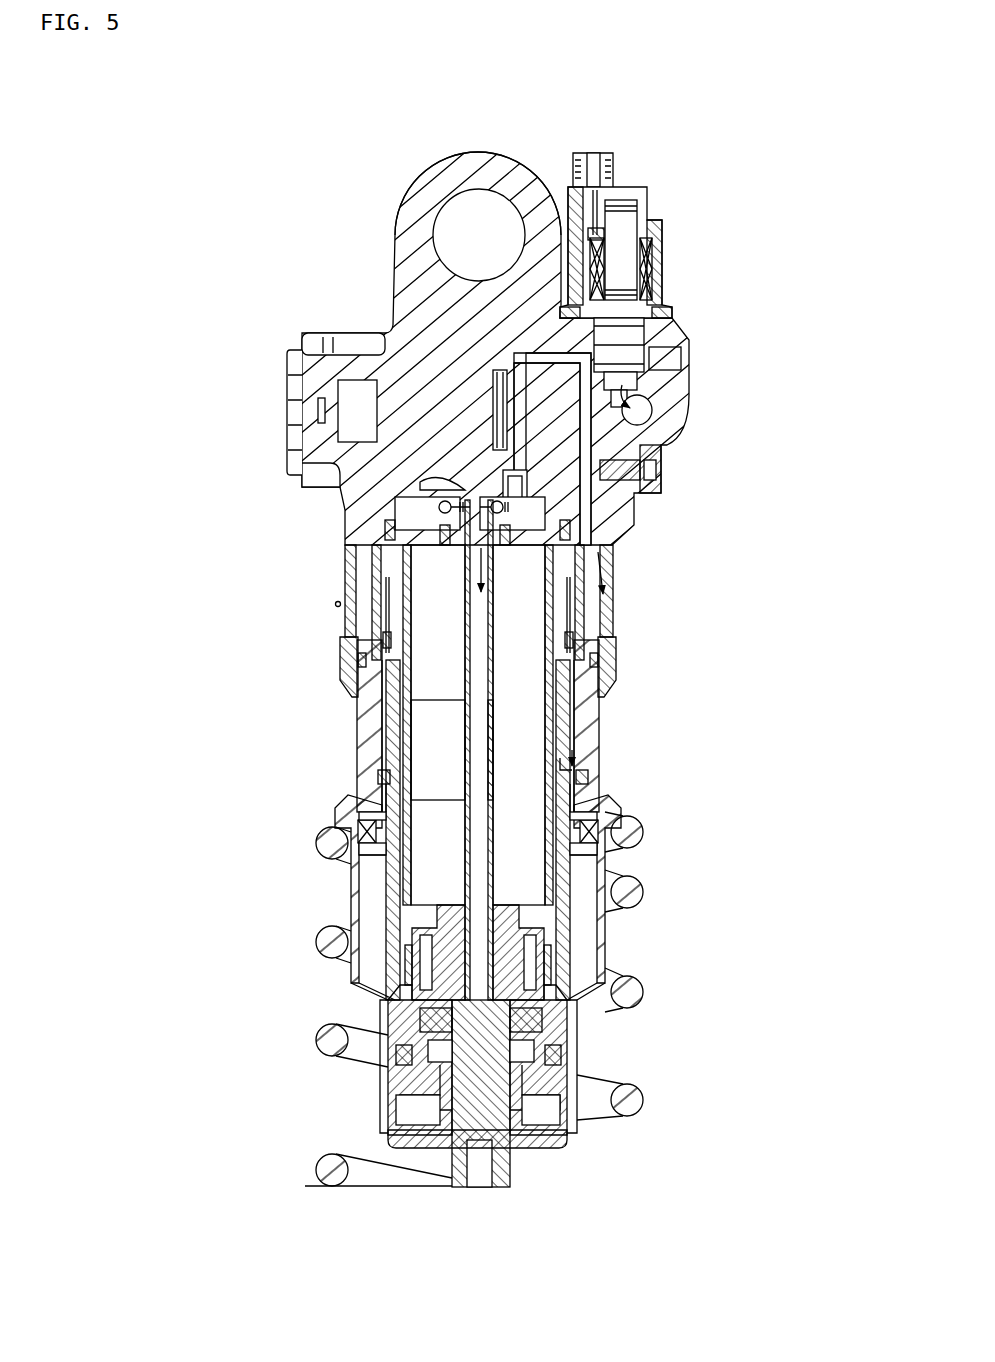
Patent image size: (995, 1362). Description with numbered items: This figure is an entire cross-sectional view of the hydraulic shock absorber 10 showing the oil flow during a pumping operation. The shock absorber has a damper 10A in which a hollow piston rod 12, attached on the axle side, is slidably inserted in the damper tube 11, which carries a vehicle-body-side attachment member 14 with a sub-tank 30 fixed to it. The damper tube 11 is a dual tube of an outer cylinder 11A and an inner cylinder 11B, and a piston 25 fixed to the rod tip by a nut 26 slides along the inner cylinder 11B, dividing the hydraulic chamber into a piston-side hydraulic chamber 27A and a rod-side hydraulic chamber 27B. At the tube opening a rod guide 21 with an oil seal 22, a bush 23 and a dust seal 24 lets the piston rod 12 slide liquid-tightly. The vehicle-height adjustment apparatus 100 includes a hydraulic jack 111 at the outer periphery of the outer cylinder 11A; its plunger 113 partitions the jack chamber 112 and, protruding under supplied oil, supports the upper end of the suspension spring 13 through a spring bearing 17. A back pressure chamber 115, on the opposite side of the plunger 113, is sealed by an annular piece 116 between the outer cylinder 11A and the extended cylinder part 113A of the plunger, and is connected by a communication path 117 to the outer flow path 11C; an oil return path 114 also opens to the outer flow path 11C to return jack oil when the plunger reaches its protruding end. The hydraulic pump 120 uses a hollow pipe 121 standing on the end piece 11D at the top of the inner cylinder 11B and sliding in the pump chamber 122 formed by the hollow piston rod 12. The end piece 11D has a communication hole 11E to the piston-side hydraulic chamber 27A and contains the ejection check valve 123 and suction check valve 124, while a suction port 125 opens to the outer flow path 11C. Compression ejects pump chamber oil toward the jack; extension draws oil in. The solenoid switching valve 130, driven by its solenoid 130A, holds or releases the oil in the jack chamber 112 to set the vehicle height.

The hydraulic shock absorber 10 is at (362, 188).
The damper 10A is at (577, 1068).
The damper tube 11 is at (405, 928).
The outer cylinder 11A is at (395, 900).
The inner cylinder 11B is at (395, 915).
The outer flow path 11C is at (400, 885).
The end piece 11D is at (518, 555).
The communication hole 11E is at (445, 555).
The piston rod 12 is at (505, 1175).
The suspension spring 13 is at (330, 1040).
The vehicle-body-side attachment member 14 is at (468, 160).
The spring bearing 17 is at (625, 822).
The rod guide 21 is at (398, 1080).
The oil seal 22 is at (535, 1045).
The bush 23 is at (535, 1073).
The dust seal 24 is at (565, 1140).
The piston 25 is at (412, 1008).
The nut 26 is at (445, 912).
The piston-side hydraulic chamber 27A is at (438, 735).
The rod-side hydraulic chamber 27B is at (560, 1020).
The sub-tank 30 is at (358, 332).
The vehicle-height adjustment apparatus 100 is at (674, 243).
The hydraulic jack 111 is at (610, 605).
The jack chamber 112 is at (590, 612).
The plunger 113 is at (598, 718).
The extended cylinder part 113A is at (605, 938).
The oil return path 114 is at (578, 770).
The back pressure chamber 115 is at (573, 800).
The annular piece 116 is at (597, 840).
The communication path 117 is at (575, 835).
The hydraulic pump 120 is at (570, 855).
The hollow pipe 121 is at (573, 872).
The pump chamber 122 is at (492, 740).
The ejection check valve 123 is at (425, 482).
The suction check valve 124 is at (480, 495).
The suction port 125 is at (410, 520).
The solenoid switching valve 130 is at (630, 212).
The solenoid 130A is at (650, 274).